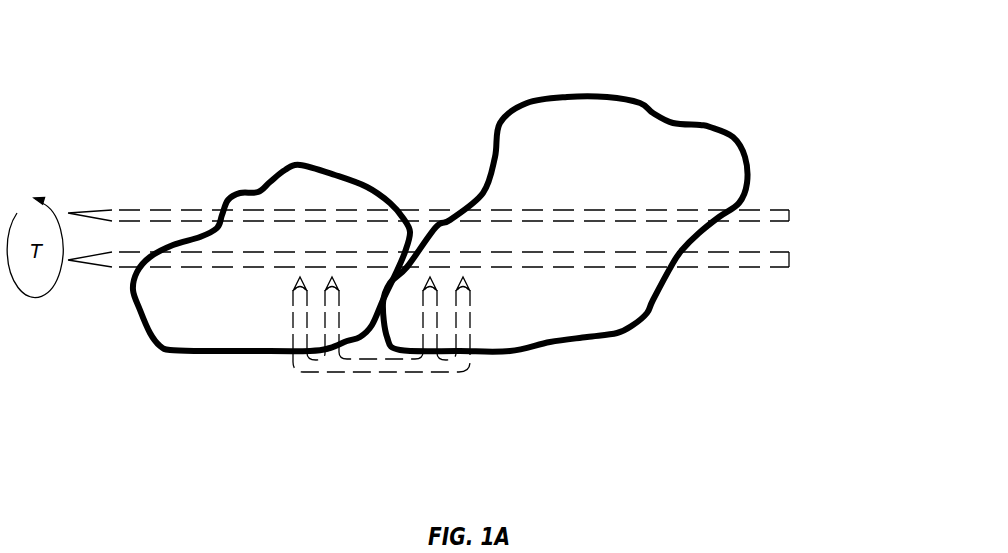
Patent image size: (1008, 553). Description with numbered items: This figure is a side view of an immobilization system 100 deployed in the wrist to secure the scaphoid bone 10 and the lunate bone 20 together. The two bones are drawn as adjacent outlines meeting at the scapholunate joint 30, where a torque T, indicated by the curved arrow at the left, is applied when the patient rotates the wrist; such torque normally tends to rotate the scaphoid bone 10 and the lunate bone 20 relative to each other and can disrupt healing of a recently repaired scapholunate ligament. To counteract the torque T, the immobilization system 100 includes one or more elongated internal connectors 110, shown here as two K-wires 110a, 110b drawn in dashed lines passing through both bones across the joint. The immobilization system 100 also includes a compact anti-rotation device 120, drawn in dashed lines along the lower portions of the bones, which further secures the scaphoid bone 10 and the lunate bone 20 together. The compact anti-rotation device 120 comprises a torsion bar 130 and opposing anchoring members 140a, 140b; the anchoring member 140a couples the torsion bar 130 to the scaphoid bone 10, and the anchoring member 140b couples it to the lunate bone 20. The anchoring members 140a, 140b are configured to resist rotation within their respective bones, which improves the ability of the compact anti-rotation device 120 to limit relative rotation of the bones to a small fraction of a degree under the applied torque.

The immobilization system 100 is at (95, 73).
The scaphoid bone 10 is at (645, 100).
The lunate bone 20 is at (297, 162).
The scapholunate joint 30 is at (437, 177).
The elongated internal connectors 110 is at (495, 239).
The K-wire 110a is at (456, 283).
The K-wire 110b is at (760, 208).
The compact anti-rotation device 120 is at (393, 377).
The torsion bar 130 is at (368, 367).
The anchoring member 140a is at (482, 320).
The anchoring member 140b is at (283, 322).